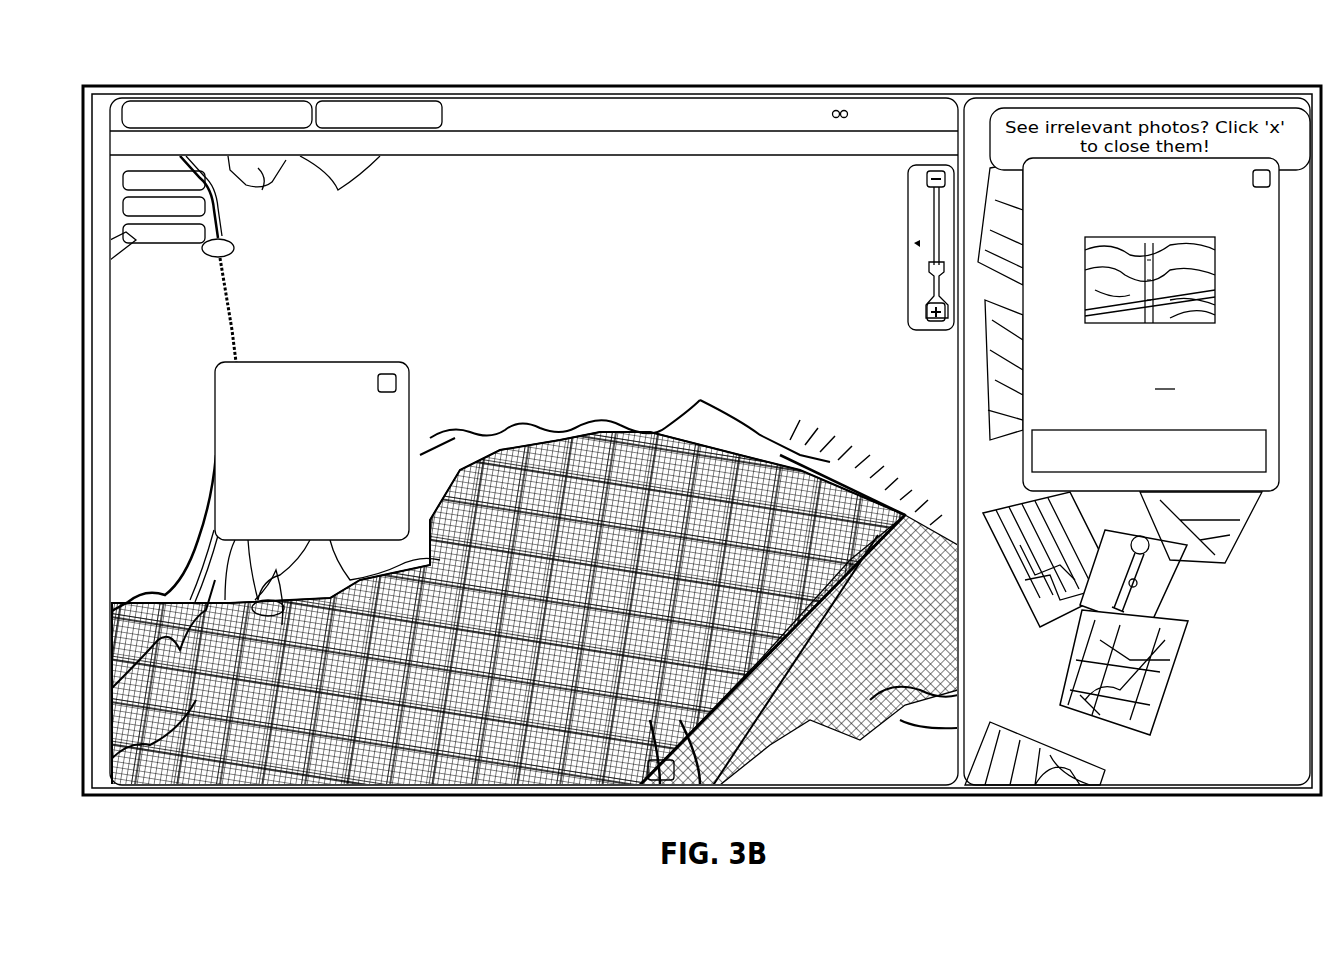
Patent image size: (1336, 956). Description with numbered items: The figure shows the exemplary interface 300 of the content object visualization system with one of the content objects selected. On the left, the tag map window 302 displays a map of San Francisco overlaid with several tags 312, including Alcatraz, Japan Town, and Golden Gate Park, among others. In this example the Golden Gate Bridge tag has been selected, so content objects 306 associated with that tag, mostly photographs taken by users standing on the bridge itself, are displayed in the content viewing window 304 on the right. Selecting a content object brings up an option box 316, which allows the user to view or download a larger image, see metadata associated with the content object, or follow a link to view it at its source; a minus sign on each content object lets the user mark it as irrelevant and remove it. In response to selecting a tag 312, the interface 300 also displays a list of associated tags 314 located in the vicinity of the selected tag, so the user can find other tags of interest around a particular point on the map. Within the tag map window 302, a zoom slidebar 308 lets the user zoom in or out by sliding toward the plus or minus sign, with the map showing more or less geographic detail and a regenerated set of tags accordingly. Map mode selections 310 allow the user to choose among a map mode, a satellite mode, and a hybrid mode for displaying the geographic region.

The interface 300 is at (122, 38).
The tag map window 302 is at (125, 390).
The content viewing window 304 is at (1222, 568).
The content objects 306 is at (1192, 640).
The zoom slidebar 308 is at (902, 222).
The map mode selections 310 is at (120, 190).
The tags 312 is at (352, 298).
The list of associated tags 314 is at (214, 453).
The option box 316 is at (1242, 360).